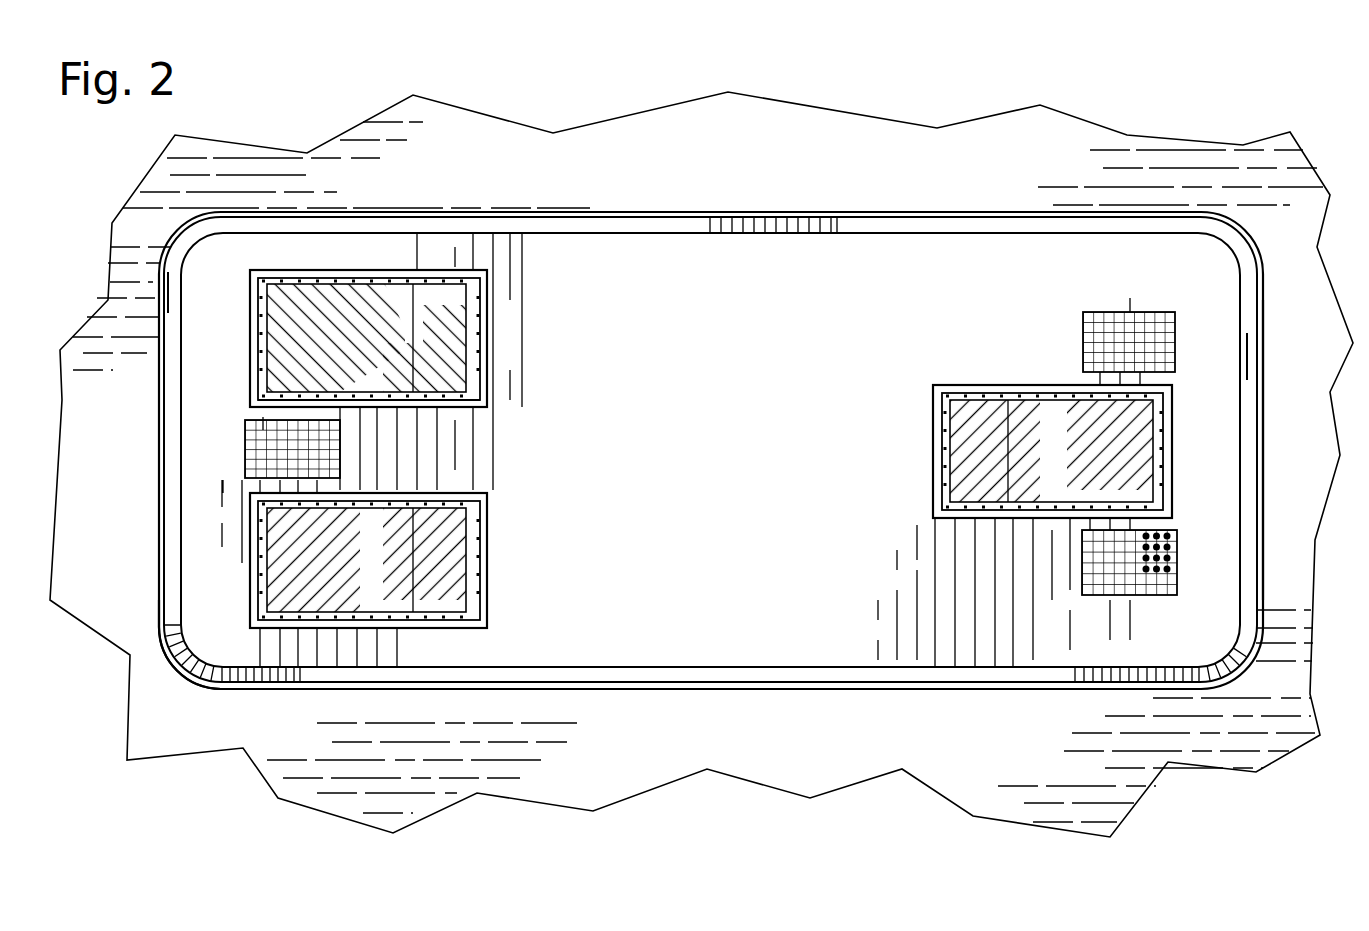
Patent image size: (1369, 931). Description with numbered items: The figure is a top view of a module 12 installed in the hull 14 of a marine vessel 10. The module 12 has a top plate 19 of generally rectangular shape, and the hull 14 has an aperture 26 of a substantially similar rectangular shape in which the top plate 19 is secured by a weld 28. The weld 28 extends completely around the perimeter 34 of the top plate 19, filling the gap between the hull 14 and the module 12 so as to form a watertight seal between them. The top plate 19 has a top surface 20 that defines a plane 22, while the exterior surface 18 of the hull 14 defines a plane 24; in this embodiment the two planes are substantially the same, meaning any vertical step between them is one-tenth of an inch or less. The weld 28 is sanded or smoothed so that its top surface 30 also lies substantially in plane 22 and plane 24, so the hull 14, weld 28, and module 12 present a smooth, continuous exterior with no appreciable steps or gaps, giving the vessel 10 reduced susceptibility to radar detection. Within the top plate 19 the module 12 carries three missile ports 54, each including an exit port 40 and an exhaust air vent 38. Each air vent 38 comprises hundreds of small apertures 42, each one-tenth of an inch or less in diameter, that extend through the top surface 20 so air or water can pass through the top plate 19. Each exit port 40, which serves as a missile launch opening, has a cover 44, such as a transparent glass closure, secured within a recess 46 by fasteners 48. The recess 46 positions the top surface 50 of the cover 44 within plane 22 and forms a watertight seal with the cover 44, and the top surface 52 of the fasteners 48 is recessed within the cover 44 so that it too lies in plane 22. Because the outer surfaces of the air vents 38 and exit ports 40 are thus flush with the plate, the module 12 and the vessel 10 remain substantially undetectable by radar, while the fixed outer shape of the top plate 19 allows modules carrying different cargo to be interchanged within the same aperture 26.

The marine vessel 10 is at (475, 122).
The module 12 is at (590, 245).
The hull 14 is at (688, 122).
The exterior surface 18 is at (600, 142).
The top plate 19 is at (646, 245).
The top surface 20 is at (700, 245).
The plane 22 is at (758, 245).
The plane 24 is at (866, 128).
The aperture 26 is at (176, 668).
The weld 28 is at (160, 648).
The top surface 30 is at (1262, 400).
The perimeter 34 is at (1258, 450).
The air vent 38 is at (258, 436).
The exit port 40 is at (466, 333).
The small apertures 42 is at (1172, 548).
The cover 44 is at (450, 366).
The recess 46 is at (475, 301).
The fasteners 48 is at (482, 406).
The top surface 50 is at (455, 338).
The top surface 52 is at (430, 401).
The missile port 54 is at (400, 300).